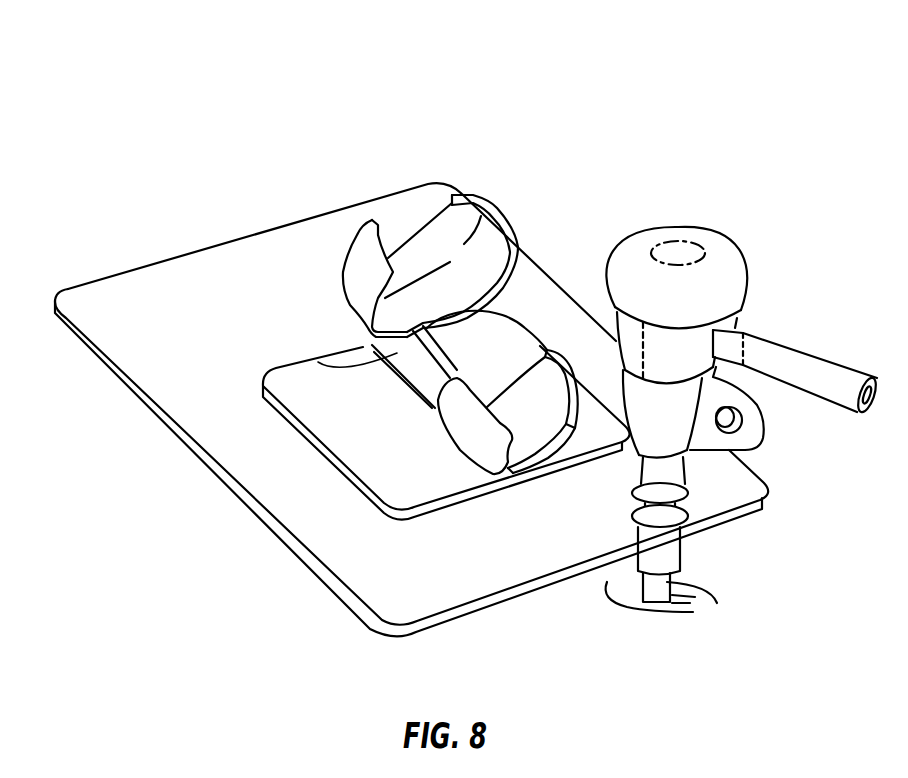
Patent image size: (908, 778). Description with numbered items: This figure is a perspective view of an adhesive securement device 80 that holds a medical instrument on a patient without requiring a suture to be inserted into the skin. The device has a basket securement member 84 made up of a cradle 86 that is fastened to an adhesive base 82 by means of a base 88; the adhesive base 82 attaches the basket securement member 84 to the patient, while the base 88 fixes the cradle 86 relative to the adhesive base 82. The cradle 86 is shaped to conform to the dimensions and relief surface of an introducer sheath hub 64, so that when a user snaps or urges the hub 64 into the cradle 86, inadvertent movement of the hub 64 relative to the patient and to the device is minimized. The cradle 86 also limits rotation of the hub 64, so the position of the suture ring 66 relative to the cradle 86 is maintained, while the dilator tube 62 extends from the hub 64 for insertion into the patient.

The adhesive securement device 80 is at (455, 84).
The adhesive base 82 is at (313, 518).
The basket securement member 84 is at (532, 206).
The cradle 86 is at (415, 214).
The base 88 is at (318, 362).
The hub 64 is at (683, 343).
The suture ring 66 is at (710, 450).
The dilator tube 62 is at (662, 582).